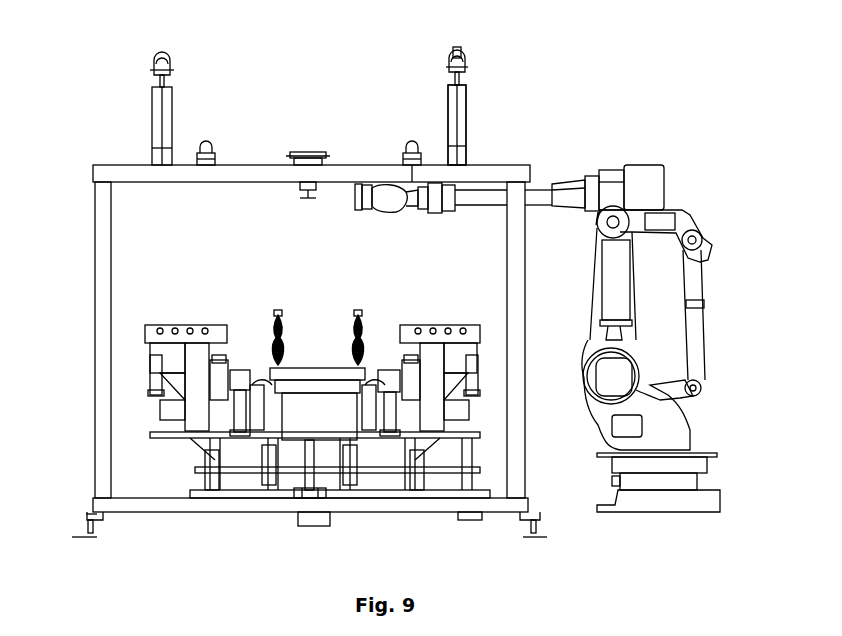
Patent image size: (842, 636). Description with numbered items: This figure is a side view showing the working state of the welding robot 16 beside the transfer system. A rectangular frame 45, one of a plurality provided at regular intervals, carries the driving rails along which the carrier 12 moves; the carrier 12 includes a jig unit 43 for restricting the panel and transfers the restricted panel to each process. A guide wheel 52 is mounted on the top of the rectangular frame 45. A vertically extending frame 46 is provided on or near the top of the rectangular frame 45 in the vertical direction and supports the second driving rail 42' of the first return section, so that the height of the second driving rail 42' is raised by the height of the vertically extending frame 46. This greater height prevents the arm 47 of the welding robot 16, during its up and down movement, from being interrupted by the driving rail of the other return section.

The rectangular frame 45 is at (93, 391).
The second driving rail of the first return section 42' is at (345, 94).
The vertically extending frame 46 is at (468, 132).
The guide wheel 52 is at (292, 153).
The arm 47 is at (542, 186).
The welding robot 16 is at (686, 204).
The jig unit 43 is at (279, 311).
The carrier 12 is at (360, 310).